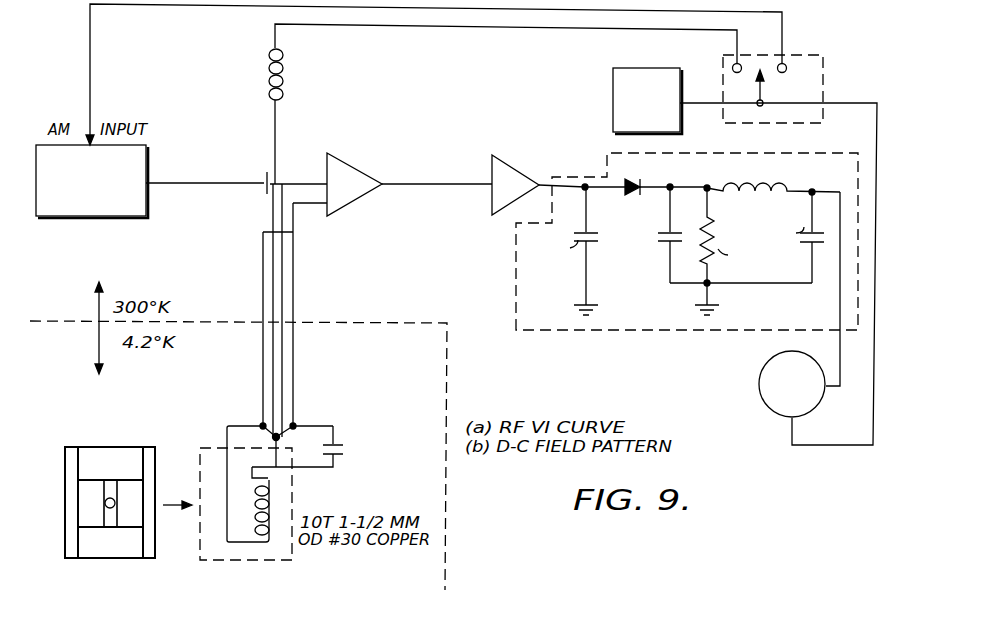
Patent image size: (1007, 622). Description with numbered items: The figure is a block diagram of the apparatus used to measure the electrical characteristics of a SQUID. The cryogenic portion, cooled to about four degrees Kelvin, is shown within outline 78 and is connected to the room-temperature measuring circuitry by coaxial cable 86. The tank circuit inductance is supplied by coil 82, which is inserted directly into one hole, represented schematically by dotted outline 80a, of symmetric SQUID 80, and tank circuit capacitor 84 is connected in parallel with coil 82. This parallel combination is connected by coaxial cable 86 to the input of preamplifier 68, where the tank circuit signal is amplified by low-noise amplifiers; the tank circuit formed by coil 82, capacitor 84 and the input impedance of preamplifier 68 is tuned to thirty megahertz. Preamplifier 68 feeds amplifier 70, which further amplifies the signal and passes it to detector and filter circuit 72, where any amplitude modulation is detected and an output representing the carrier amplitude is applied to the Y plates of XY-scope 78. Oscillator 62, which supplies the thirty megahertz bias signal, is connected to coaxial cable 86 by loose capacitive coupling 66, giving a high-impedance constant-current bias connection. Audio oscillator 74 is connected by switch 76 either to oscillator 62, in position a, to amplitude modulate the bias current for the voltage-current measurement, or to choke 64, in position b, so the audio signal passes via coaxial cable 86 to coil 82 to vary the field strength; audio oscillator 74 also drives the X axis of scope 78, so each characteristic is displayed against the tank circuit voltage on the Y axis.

The oscillator 62 is at (149, 154).
The choke 64 is at (268, 60).
The capacitive coupling 66 is at (265, 176).
The preamplifier 68 is at (327, 162).
The amplifier 70 is at (492, 165).
The detector and filter circuit 72 is at (681, 172).
The audio oscillator 74 is at (655, 68).
The switch 76 is at (830, 48).
The XY-scope 78 is at (768, 369).
The symmetric SQUID 80 is at (65, 447).
The dotted outline 80a is at (201, 448).
The coil 82 is at (268, 478).
The tank circuit capacitor 84 is at (344, 448).
The coaxial cable 86 is at (294, 414).